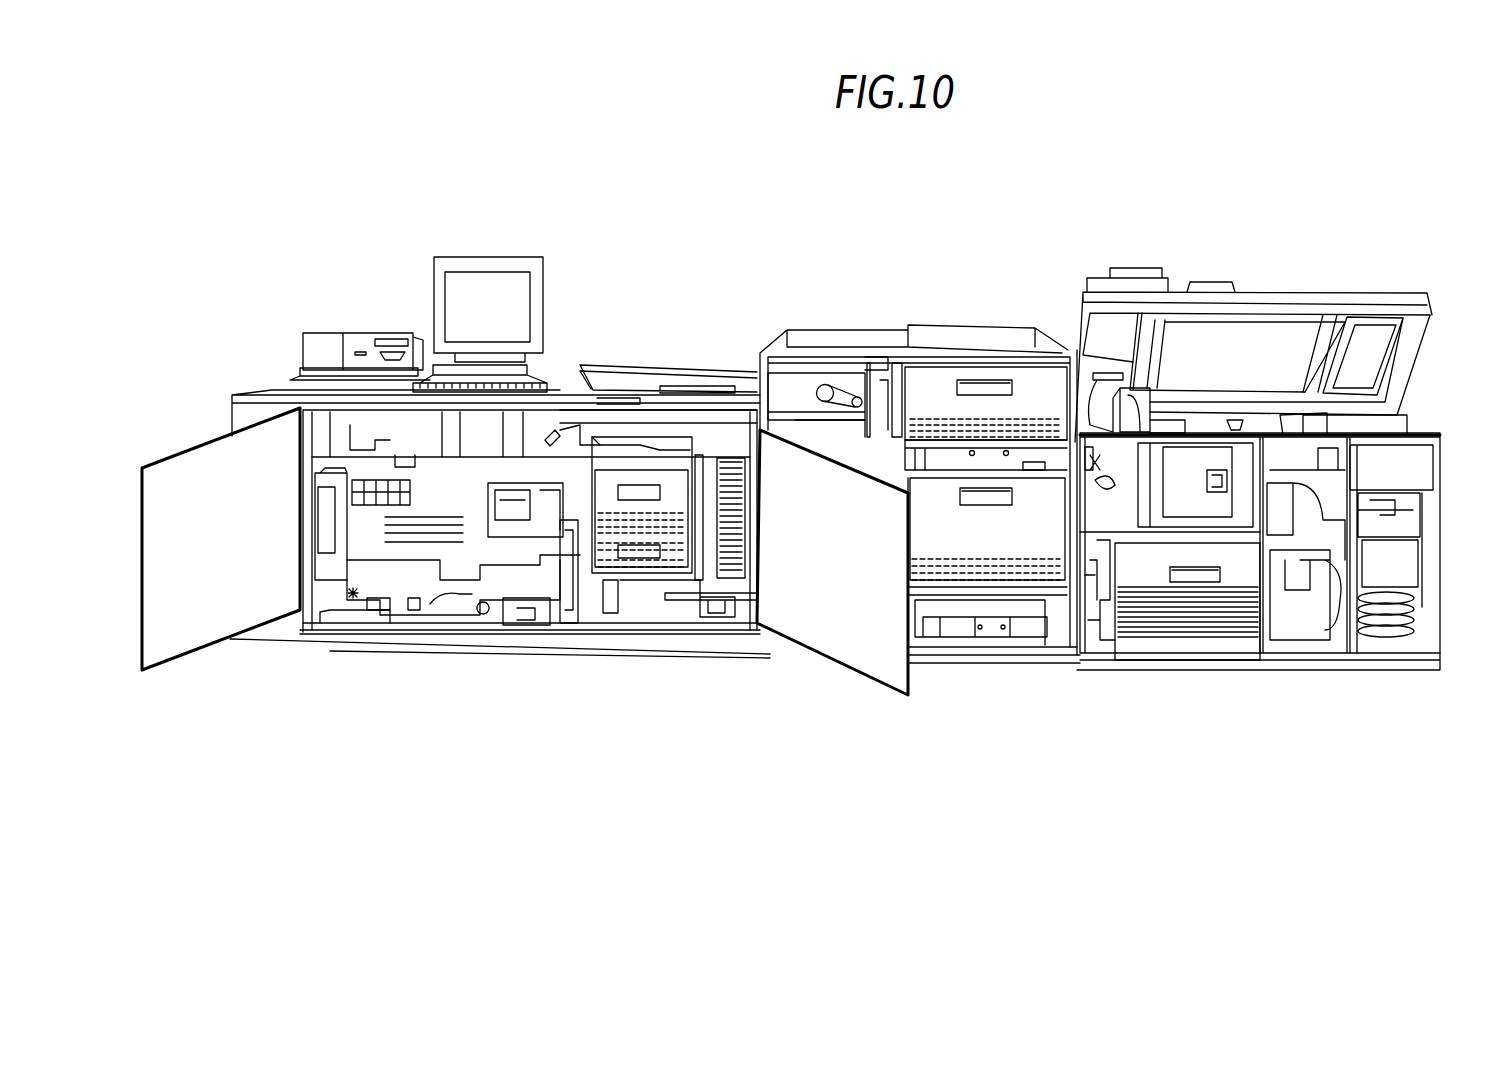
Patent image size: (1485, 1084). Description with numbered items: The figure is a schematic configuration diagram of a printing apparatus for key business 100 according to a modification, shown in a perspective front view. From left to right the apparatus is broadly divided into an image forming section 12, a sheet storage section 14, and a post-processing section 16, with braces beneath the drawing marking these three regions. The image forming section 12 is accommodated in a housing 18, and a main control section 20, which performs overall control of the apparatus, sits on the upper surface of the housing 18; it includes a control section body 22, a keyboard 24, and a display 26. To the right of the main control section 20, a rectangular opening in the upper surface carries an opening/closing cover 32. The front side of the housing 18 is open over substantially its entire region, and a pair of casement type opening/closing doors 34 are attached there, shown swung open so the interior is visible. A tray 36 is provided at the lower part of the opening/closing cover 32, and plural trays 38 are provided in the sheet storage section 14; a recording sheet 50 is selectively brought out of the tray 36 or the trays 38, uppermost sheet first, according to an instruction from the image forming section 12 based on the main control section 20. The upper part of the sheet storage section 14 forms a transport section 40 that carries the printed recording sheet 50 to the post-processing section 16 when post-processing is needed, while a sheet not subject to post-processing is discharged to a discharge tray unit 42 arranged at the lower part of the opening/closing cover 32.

The image forming apparatus 100 is at (912, 276).
The image forming section 12 is at (760, 735).
The sheet storage section 14 is at (772, 741).
The post-processing section 16 is at (1064, 742).
The housing 18 is at (248, 397).
The main control section 20 is at (330, 203).
The control section body 22 is at (367, 338).
The keyboard 24 is at (424, 378).
The display 26 is at (453, 294).
The opening/closing cover 32 is at (676, 372).
The opening/closing doors 34 is at (191, 617).
The tray 36 is at (670, 557).
The trays 38 is at (1003, 540).
The transport section 40 is at (808, 385).
The discharge tray unit 42 is at (730, 553).
The recording sheet 50 is at (608, 510).